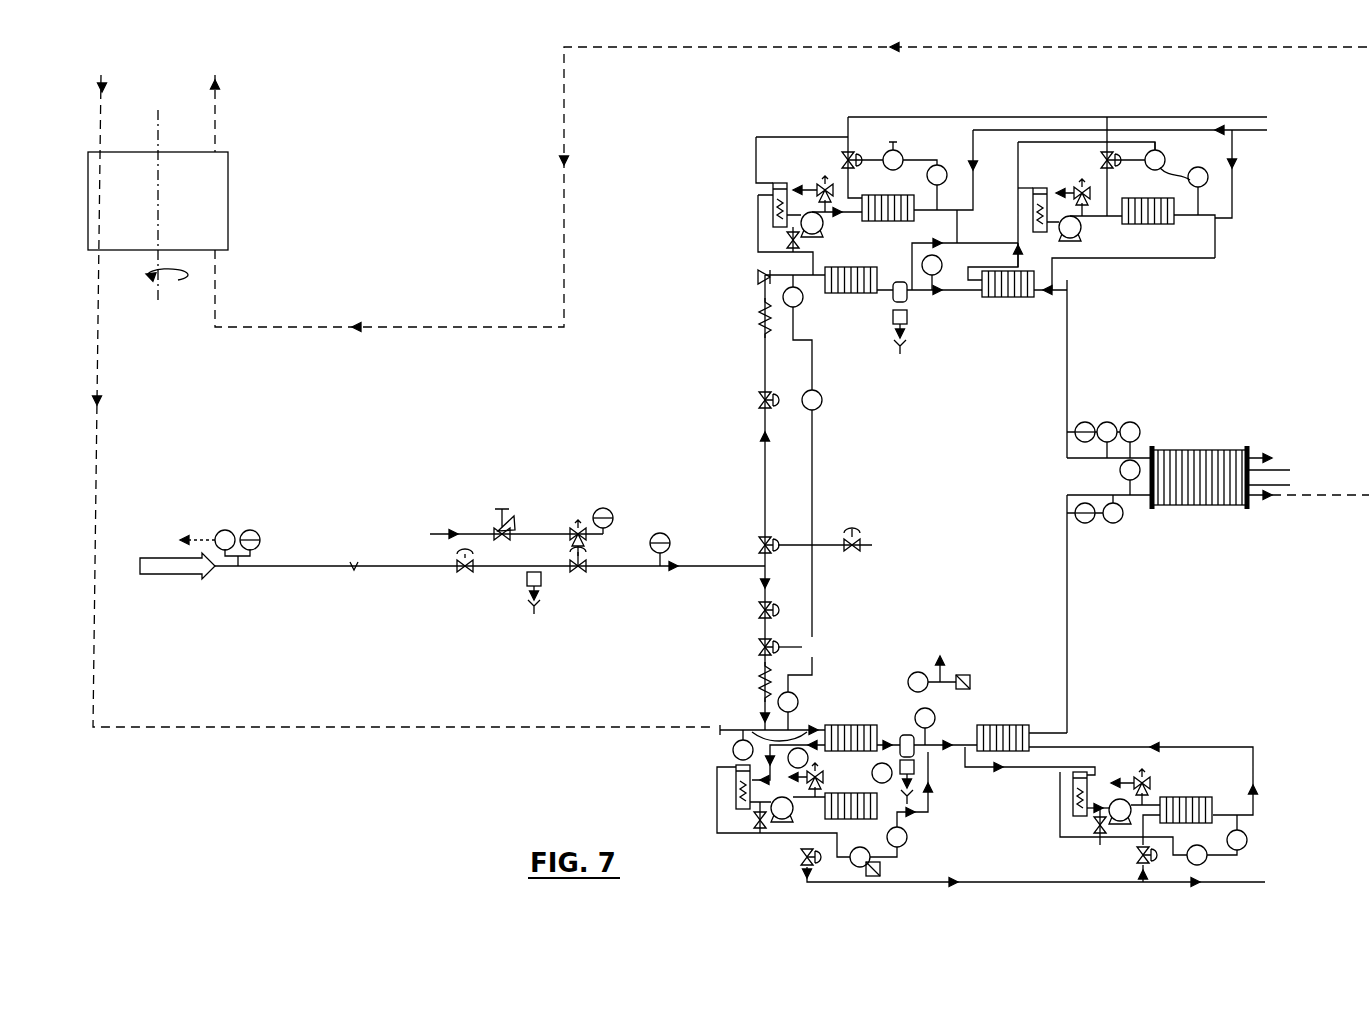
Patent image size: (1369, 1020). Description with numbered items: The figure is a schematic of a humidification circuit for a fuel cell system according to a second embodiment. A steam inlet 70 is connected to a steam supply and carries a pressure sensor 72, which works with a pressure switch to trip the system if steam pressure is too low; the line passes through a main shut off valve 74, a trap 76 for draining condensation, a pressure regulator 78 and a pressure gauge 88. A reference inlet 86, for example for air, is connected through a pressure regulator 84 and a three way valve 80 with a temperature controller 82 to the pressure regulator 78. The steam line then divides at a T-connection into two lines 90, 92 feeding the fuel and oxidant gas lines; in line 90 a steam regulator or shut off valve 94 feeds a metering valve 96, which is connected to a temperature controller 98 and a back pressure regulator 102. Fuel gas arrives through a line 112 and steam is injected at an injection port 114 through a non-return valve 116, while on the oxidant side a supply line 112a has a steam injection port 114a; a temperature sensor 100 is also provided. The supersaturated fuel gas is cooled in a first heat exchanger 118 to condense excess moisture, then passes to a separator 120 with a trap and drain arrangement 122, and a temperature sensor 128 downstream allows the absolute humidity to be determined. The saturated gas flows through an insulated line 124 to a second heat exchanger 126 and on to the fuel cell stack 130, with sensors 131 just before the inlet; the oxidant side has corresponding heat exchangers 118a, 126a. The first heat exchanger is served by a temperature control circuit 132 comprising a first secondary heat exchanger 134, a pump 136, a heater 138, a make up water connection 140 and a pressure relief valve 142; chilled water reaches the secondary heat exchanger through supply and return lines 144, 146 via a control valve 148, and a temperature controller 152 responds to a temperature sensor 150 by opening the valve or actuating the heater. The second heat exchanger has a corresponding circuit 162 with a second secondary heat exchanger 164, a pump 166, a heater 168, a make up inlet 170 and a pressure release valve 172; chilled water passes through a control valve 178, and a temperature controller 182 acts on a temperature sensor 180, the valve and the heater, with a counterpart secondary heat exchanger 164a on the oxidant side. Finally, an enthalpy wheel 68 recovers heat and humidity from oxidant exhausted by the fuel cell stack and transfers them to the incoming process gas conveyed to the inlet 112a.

The enthalpy wheel 68 is at (228, 208).
The steam inlet 70 is at (238, 572).
The pressure sensor 72 is at (234, 530).
The main shut off valve 74 is at (460, 575).
The trap 76 is at (525, 600).
The pressure regulator 78 is at (578, 575).
The three way valve 80 is at (576, 522).
The temperature controller 82 is at (612, 516).
The pressure regulator 84 is at (496, 522).
The reference inlet 86 is at (420, 533).
The pressure gauge 88 is at (672, 534).
The line 90 is at (762, 546).
The line 92 is at (762, 588).
The steam regulator or shut off valve 94 is at (780, 546).
The metering valve 96 is at (760, 410).
The temperature controller 98 is at (822, 400).
The temperature sensor 100 is at (801, 307).
The back pressure regulator 102 is at (838, 537).
The fuel gas line 112 is at (758, 276).
The injection port 114 is at (755, 278).
The non-return valve 116 is at (757, 307).
The first heat exchanger 118 is at (856, 267).
The separator 120 is at (893, 305).
The trap and drain arrangement 122 is at (908, 354).
The line 124 is at (933, 300).
The second heat exchanger 126 is at (1005, 300).
The temperature sensor 128 is at (942, 261).
The fuel cell stack 130 is at (1170, 448).
The sensors 131 is at (1100, 417).
The temperature control circuit 132 is at (970, 130).
The first secondary heat exchanger 134 is at (901, 198).
The pump 136 is at (821, 224).
The heater 138 is at (773, 217).
The connection 140 is at (757, 236).
The pressure relief valve 142 is at (814, 188).
The supply line 144 is at (1267, 132).
The return line 146 is at (1267, 117).
The control valve 148 is at (848, 152).
The temperature sensor 150 is at (943, 165).
The temperature controller 152 is at (893, 142).
The temperature control circuit 162 is at (1215, 257).
The second secondary heat exchanger 164 is at (1160, 223).
The pump 166 is at (1080, 236).
The heater 168 is at (1033, 225).
The make up inlet 170 is at (1071, 262).
The pressure release valve 172 is at (1070, 188).
The control valve 178 is at (1118, 142).
The temperature sensor 180 is at (1167, 157).
The temperature controller 182 is at (1208, 206).
The supply line 112a is at (737, 727).
The steam injection port 114a is at (810, 734).
The first heat exchanger 118a is at (867, 724).
The second heat exchanger 126a is at (1010, 726).
The second secondary heat exchanger 164a is at (1200, 797).